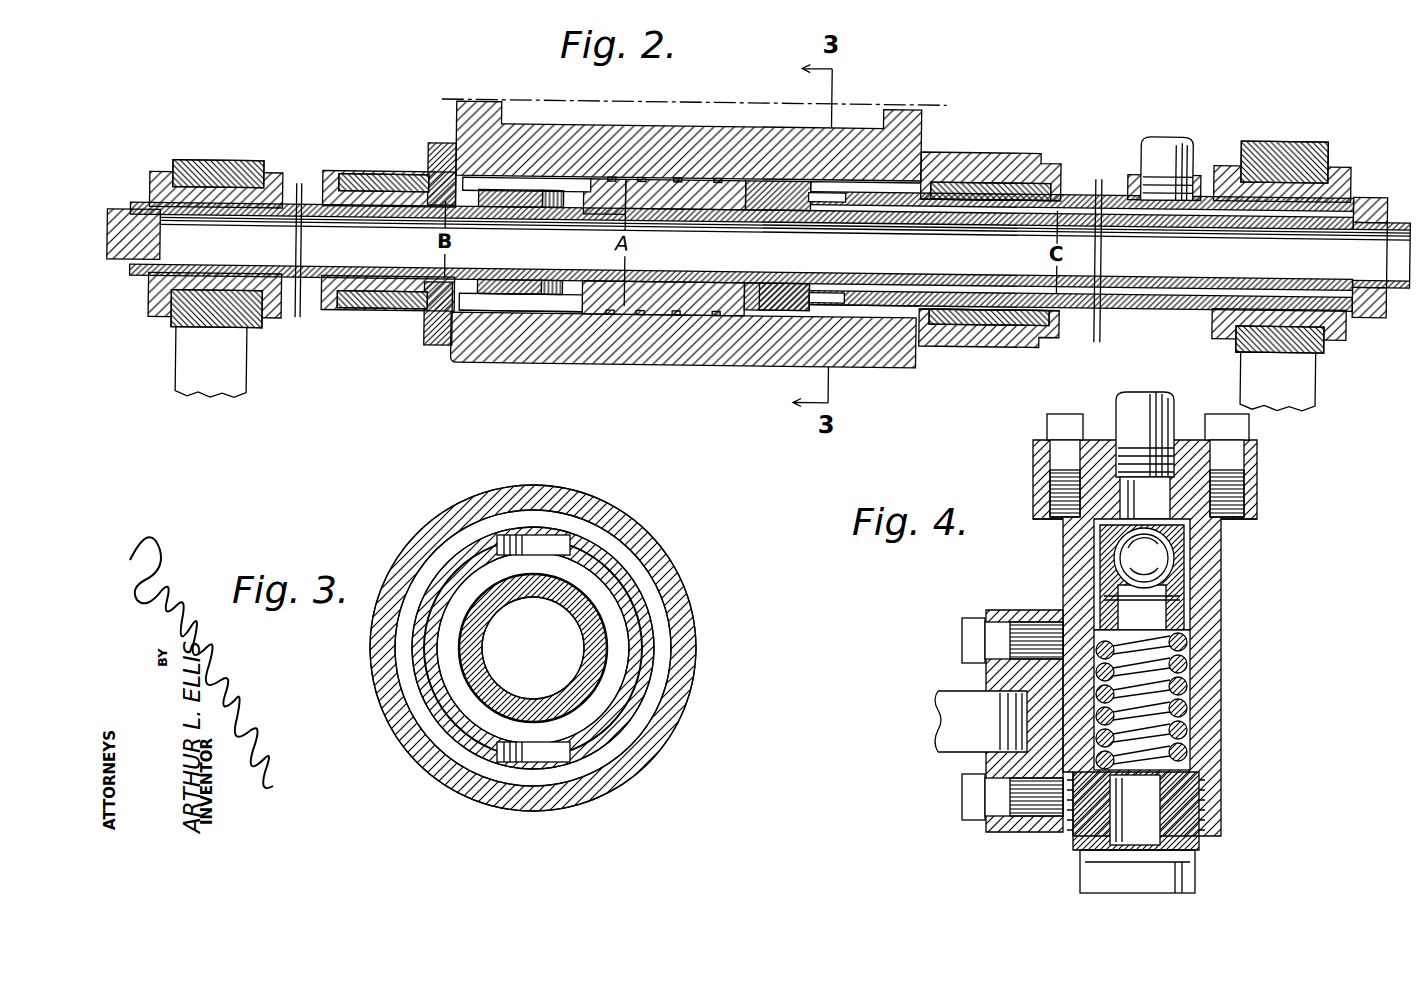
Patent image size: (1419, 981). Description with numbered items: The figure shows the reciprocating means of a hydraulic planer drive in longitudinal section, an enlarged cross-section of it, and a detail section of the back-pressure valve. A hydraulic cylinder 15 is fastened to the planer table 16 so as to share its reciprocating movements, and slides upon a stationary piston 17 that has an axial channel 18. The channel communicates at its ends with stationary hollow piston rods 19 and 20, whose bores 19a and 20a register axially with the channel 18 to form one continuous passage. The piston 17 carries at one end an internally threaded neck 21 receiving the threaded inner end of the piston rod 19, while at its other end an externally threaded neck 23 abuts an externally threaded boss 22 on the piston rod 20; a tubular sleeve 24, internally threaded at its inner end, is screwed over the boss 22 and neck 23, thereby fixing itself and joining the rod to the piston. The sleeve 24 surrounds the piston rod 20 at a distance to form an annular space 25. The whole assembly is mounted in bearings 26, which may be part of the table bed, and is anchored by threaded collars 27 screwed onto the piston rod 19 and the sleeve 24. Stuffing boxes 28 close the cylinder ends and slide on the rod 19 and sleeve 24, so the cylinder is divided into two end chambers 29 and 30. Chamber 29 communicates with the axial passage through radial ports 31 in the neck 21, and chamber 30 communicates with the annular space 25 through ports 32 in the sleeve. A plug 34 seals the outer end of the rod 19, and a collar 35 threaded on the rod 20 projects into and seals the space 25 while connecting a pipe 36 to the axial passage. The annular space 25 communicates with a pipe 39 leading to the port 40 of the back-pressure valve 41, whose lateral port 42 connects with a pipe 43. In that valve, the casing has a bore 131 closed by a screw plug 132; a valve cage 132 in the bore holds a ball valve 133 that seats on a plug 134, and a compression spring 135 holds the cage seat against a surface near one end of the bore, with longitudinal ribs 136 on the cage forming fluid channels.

In FIG. 2, the hydraulic cylinder 15 is at (700, 352).
In FIG. 2, the planer table 16 is at (905, 110).
In FIG. 2, the stationary piston 17 is at (652, 318).
In FIG. 2, the axial channel 18 is at (664, 246).
In FIG. 2, the piston rod 19 is at (312, 292).
In FIG. 2, the piston rod bore 19a is at (395, 300).
In FIG. 2, the piston rod 20 is at (1110, 303).
In FIG. 3, the piston rod 20 is at (458, 656).
In FIG. 2, the piston rod bore 20a is at (1165, 262).
In FIG. 3, the piston rod bore 20a is at (533, 648).
In FIG. 2, the internally threaded neck 21 is at (496, 300).
In FIG. 2, the externally threaded boss 22 is at (785, 288).
In FIG. 2, the externally threaded neck 23 is at (753, 278).
In FIG. 2, the tubular sleeve 24 is at (1197, 306).
In FIG. 3, the tubular sleeve 24 is at (625, 578).
In FIG. 2, the annular space 25 is at (1006, 290).
In FIG. 3, the annular space 25 is at (478, 585).
In FIG. 2, the bearings 26 is at (216, 388).
In FIG. 2, the threaded collars 27 is at (152, 182).
In FIG. 2, the stuffing boxes 28 is at (410, 312).
In FIG. 2, the end chamber 29 is at (530, 310).
In FIG. 2, the end chamber 30 is at (892, 312).
In FIG. 2, the ports 31 is at (550, 268).
In FIG. 2, the ports 32 is at (828, 203).
In FIG. 3, the ports 32 is at (556, 545).
In FIG. 2, the plug 34 is at (136, 270).
In FIG. 2, the collar 35 is at (1375, 312).
In FIG. 2, the pipe 36 is at (1395, 300).
In FIG. 2, the pipe 39 is at (1140, 160).
In FIG. 4, the pipe 39 is at (1116, 408).
In FIG. 4, the port 40 is at (1157, 502).
In FIG. 4, the back-pressure valve 41 is at (1214, 666).
In FIG. 4, the port 42 is at (1000, 721).
In FIG. 4, the pipe 43 is at (955, 740).
In FIG. 4, the bore 131 is at (1186, 702).
In FIG. 4, the valve cage 132 is at (1196, 596).
In FIG. 4, the ball valve 133 is at (1120, 558).
In FIG. 4, the plug 134 is at (1182, 582).
In FIG. 4, the compression spring 135 is at (1188, 740).
In FIG. 4, the ribs 136 is at (1190, 554).